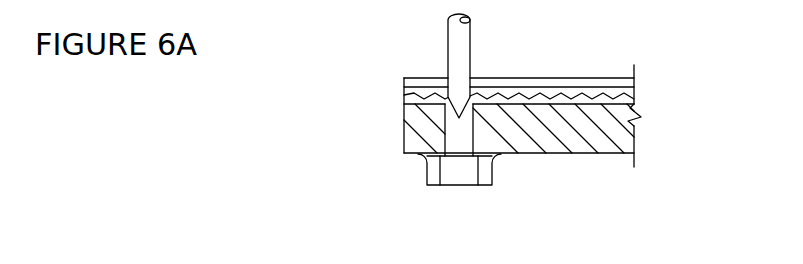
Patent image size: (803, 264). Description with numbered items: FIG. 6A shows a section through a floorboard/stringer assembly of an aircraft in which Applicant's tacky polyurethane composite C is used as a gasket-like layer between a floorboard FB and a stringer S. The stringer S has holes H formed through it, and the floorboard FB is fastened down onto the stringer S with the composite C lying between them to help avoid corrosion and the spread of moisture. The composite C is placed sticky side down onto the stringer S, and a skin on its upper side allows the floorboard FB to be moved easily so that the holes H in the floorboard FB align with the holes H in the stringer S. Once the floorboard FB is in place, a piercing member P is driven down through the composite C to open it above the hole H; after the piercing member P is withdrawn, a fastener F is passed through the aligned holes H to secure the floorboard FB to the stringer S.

The piercing member P is at (470, 55).
The floorboard FB is at (550, 78).
The composite C is at (636, 91).
The stringer S is at (618, 138).
The fastener F is at (448, 187).
The hole H is at (474, 131).